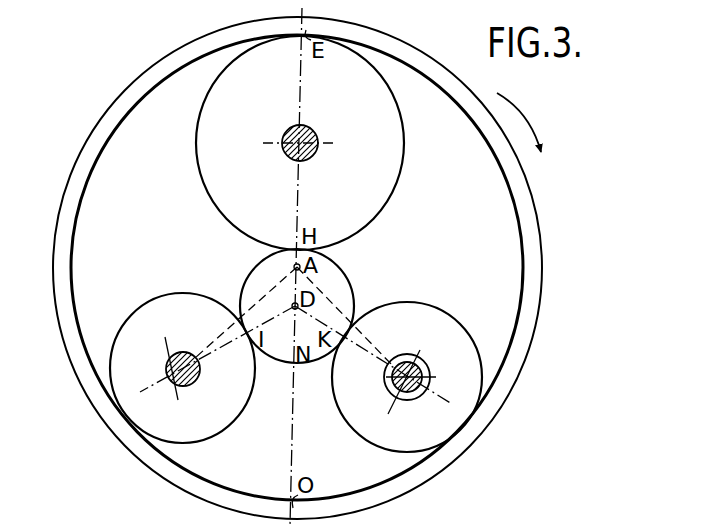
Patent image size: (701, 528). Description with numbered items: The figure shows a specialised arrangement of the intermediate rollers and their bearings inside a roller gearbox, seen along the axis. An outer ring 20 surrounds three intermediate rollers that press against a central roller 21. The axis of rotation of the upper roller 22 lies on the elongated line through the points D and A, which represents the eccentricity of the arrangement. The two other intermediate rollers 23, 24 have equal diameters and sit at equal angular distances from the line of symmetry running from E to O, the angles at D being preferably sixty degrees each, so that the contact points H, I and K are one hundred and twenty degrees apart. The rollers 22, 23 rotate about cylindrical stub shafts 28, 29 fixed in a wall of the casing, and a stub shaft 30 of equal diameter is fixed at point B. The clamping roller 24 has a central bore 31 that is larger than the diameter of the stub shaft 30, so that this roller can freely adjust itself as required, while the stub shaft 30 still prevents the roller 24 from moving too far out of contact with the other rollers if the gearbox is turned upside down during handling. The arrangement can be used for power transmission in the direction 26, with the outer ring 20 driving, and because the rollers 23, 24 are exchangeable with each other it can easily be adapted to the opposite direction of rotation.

The outer ring 20 is at (108, 120).
The sun gear 21 is at (260, 275).
The roller 22 is at (383, 78).
The intermediate roller 23 is at (112, 346).
The clamping roller 24 is at (481, 390).
The direction of power transmission 26 is at (510, 111).
The cylindrical stub shaft 28 is at (289, 134).
The cylindrical stub shaft 29 is at (182, 388).
The stub shaft 30 is at (415, 396).
The central bore 31 is at (405, 399).